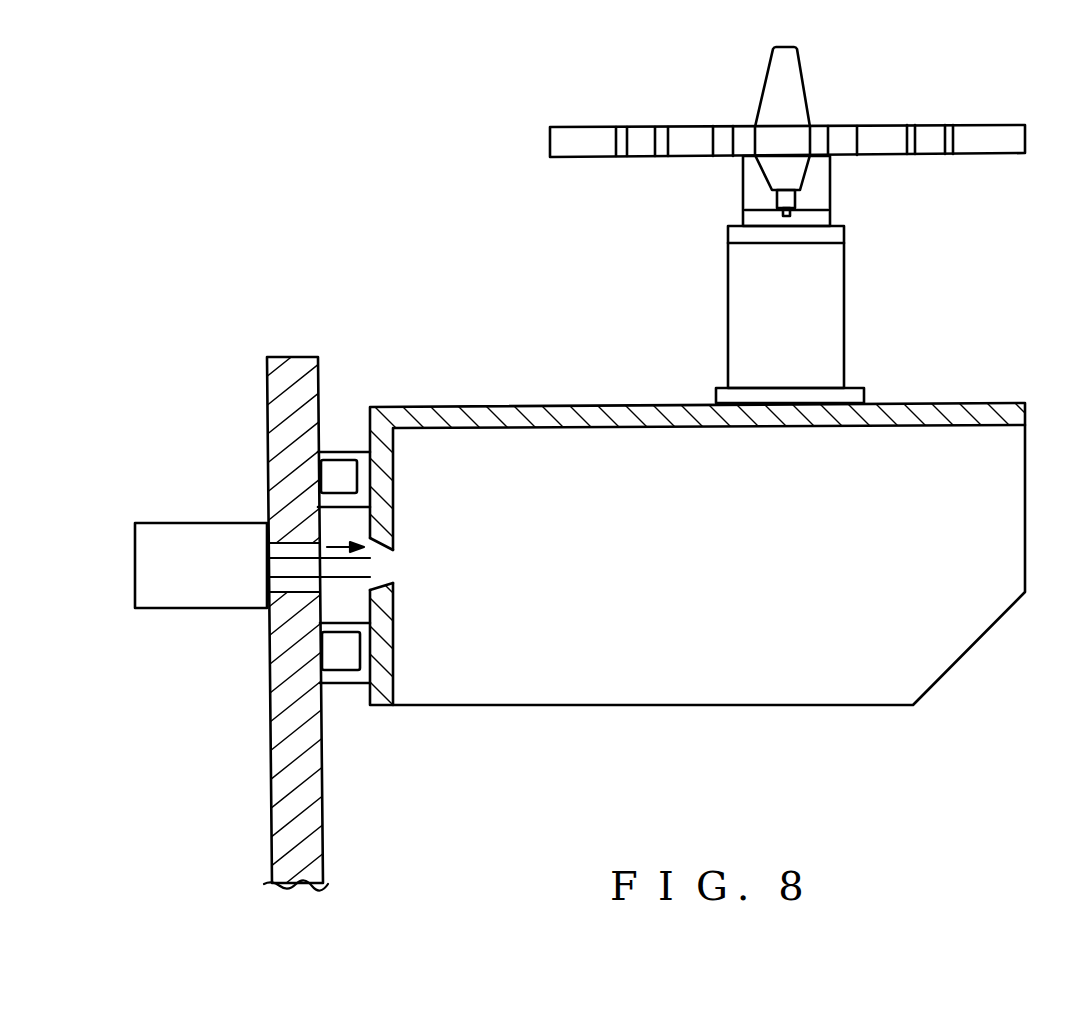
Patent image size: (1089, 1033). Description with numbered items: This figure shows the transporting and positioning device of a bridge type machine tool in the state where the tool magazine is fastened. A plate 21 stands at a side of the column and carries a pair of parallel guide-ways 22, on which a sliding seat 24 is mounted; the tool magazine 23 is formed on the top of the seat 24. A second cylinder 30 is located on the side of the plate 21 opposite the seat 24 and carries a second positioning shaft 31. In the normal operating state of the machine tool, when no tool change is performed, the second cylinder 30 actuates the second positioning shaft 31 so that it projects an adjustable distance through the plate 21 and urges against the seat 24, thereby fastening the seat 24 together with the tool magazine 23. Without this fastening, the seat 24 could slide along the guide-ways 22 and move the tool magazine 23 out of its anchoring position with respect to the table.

The plate 21 is at (297, 373).
The guide-ways 22 is at (337, 473).
The tool magazine 23 is at (935, 181).
The sliding seat 24 is at (440, 417).
The second cylinder 30 is at (165, 538).
The second positioning shaft 31 is at (352, 566).